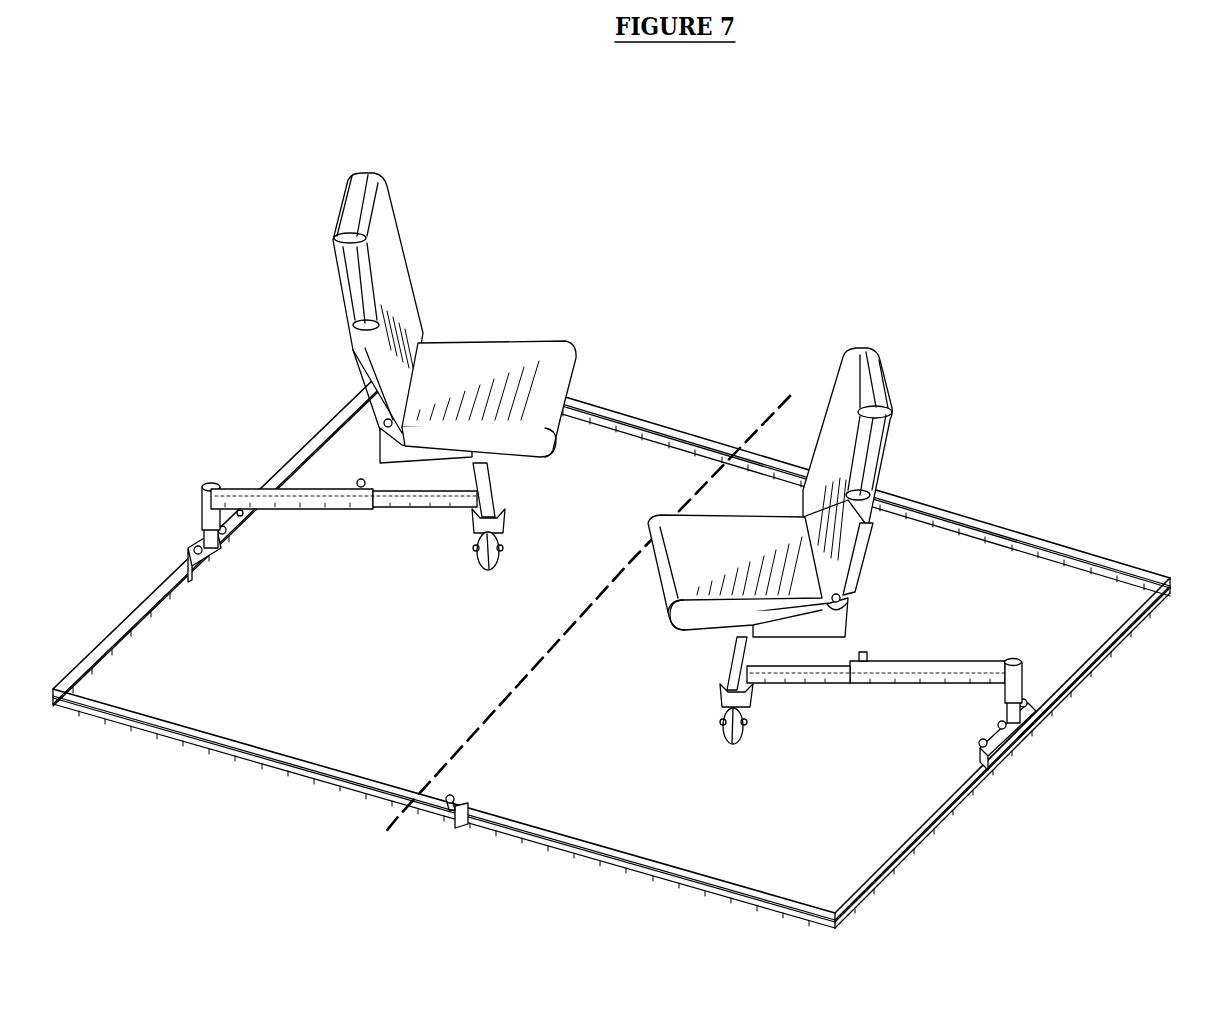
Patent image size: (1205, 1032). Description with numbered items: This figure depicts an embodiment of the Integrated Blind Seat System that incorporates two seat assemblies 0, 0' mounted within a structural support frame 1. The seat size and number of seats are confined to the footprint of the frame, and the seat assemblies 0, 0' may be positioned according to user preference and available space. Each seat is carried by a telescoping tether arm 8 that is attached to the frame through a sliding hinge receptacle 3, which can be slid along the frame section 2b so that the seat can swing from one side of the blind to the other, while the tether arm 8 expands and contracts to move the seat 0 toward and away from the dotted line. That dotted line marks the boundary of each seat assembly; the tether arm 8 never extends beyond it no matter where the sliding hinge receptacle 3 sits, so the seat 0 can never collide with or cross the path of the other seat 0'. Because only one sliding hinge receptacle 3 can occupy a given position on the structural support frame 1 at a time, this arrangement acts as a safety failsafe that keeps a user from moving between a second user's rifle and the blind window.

The seat assembly 0 is at (835, 506).
The seat assembly 0' is at (382, 342).
The structural support frame 1 is at (406, 772).
The frame section 2b is at (1125, 640).
The sliding hinge receptacle 3 is at (1030, 737).
The tether arm 8 is at (808, 681).